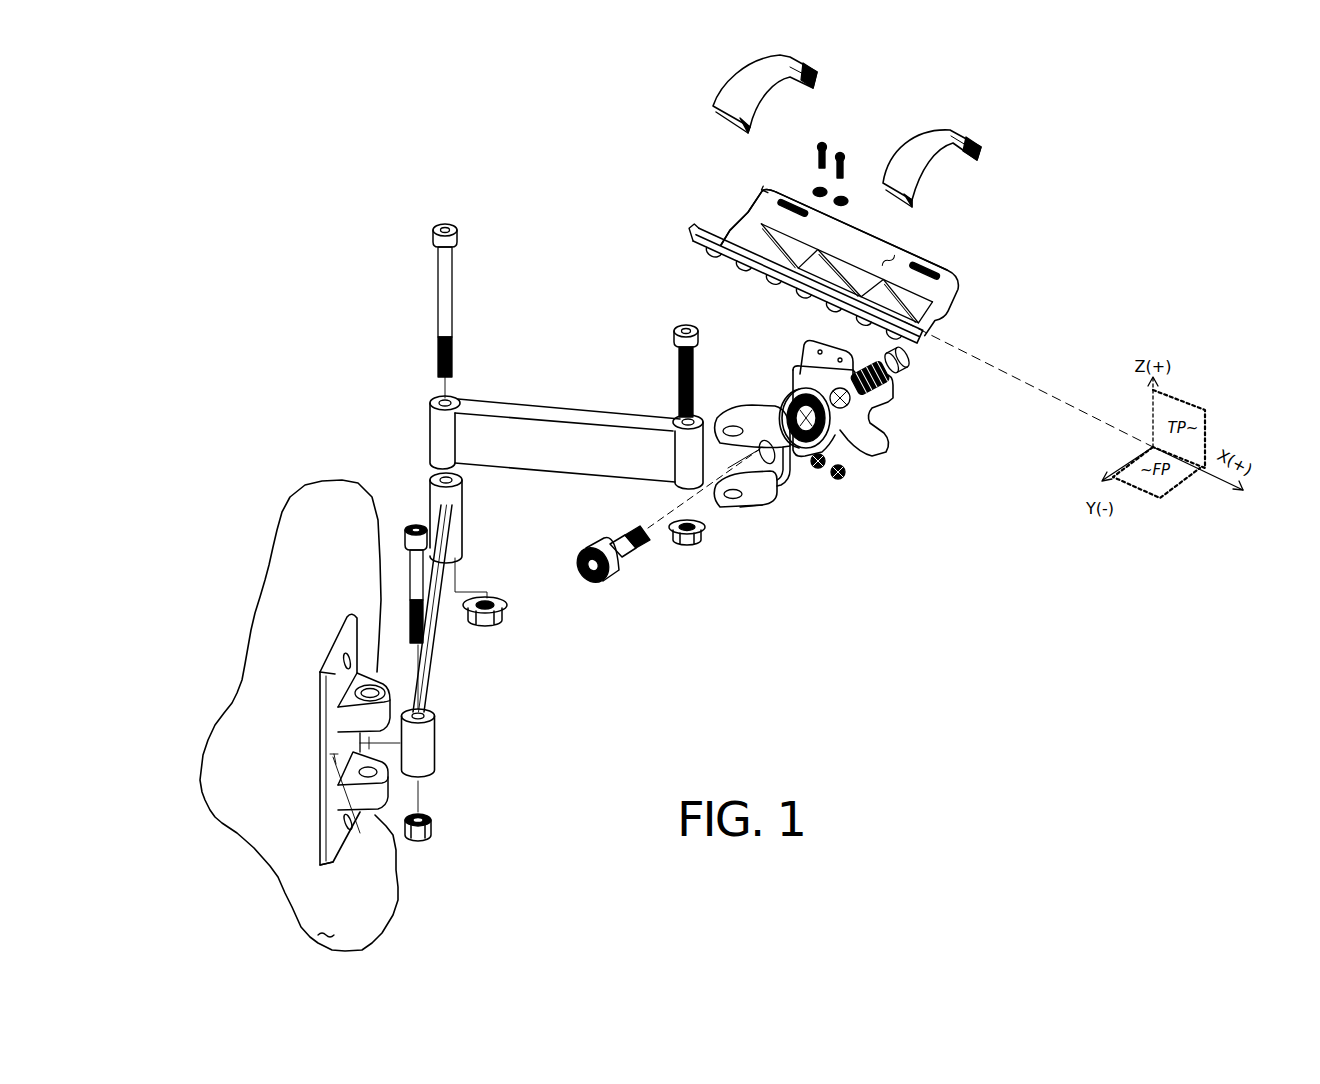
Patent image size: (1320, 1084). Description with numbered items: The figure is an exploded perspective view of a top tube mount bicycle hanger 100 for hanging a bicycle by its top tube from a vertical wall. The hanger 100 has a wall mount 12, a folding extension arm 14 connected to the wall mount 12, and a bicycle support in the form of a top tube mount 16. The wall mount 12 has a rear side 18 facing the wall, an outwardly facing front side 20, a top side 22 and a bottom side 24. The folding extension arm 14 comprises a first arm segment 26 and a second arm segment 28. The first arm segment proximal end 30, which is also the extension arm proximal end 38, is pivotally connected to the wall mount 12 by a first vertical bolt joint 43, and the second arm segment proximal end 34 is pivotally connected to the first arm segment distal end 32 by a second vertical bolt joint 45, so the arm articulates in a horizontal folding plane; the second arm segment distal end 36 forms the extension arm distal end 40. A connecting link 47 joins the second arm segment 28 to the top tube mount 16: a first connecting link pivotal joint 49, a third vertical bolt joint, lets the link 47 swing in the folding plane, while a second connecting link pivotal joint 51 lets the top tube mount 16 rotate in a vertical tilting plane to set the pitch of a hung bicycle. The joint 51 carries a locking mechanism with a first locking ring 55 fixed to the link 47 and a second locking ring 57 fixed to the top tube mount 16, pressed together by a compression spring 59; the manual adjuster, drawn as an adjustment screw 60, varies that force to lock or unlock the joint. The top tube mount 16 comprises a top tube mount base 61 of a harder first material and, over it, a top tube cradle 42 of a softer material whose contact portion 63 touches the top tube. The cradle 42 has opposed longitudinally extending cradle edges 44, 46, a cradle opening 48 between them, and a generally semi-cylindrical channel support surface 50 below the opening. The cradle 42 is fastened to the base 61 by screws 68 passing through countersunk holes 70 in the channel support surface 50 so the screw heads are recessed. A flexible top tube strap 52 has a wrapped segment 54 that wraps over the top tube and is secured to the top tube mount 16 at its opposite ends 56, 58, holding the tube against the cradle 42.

The top tube mount hanger 100 is at (545, 198).
The wall mount 12 is at (295, 632).
The folding extension arm 14 is at (480, 422).
The top tube mount 16 is at (911, 457).
The rear side 18 is at (336, 717).
The front side 20 is at (375, 815).
The top side 22 is at (338, 627).
The bottom side 24 is at (336, 862).
The first arm segment 26 is at (449, 662).
The second arm segment 28 is at (570, 405).
The first arm segment proximal end 30 is at (470, 743).
The extension arm proximal end 38 is at (430, 755).
The first arm segment distal end 32 is at (464, 486).
The second arm segment proximal end 34 is at (430, 425).
The second arm segment distal end 36 is at (749, 433).
The extension arm distal end 40 is at (713, 460).
The top tube cradle 42 is at (884, 224).
The first vertical bolt joint 43 is at (418, 518).
The cradle edge 44 is at (735, 246).
The second vertical bolt joint 45 is at (445, 214).
The cradle edge 46 is at (930, 250).
The connecting link 47 is at (770, 506).
The cradle opening 48 is at (775, 188).
The first connecting link pivotal joint 49 is at (685, 310).
The channel support surface 50 is at (878, 253).
The second connecting link pivotal joint 51 is at (578, 568).
The top tube strap 52 is at (853, 142).
The wrapped segment 54 is at (755, 73).
The first locking ring 55 is at (800, 460).
The strap end 56 is at (712, 118).
The second locking ring 57 is at (838, 479).
The strap end 58 is at (822, 60).
The compression spring 59 is at (885, 385).
The bolt 60 is at (583, 550).
The top tube mount base 61 is at (883, 433).
The contact portion 63 is at (760, 196).
The screws 68 is at (826, 145).
The countersunk holes 70 is at (838, 275).